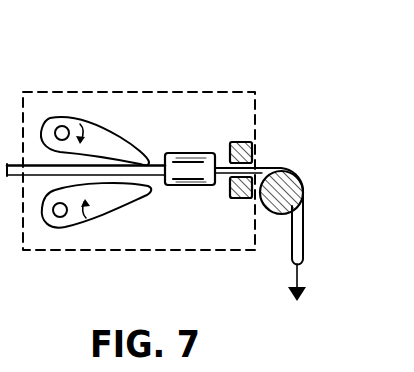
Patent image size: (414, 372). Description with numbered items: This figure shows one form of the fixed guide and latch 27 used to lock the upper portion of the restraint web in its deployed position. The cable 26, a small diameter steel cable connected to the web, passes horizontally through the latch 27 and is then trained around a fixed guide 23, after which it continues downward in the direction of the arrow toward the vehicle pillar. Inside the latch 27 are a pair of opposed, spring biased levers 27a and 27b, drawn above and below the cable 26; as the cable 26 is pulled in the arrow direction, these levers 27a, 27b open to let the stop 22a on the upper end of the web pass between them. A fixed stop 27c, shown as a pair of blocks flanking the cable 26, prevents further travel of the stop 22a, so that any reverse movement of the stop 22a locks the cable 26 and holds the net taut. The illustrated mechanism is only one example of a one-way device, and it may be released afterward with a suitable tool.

The fixed guide and latch 27 is at (135, 84).
The spring biased lever 27a is at (128, 139).
The spring biased lever 27b is at (117, 215).
The fixed stop 27c is at (257, 137).
The stop 22a is at (190, 189).
The fixed guide 23 is at (304, 187).
The cable 26 is at (304, 232).